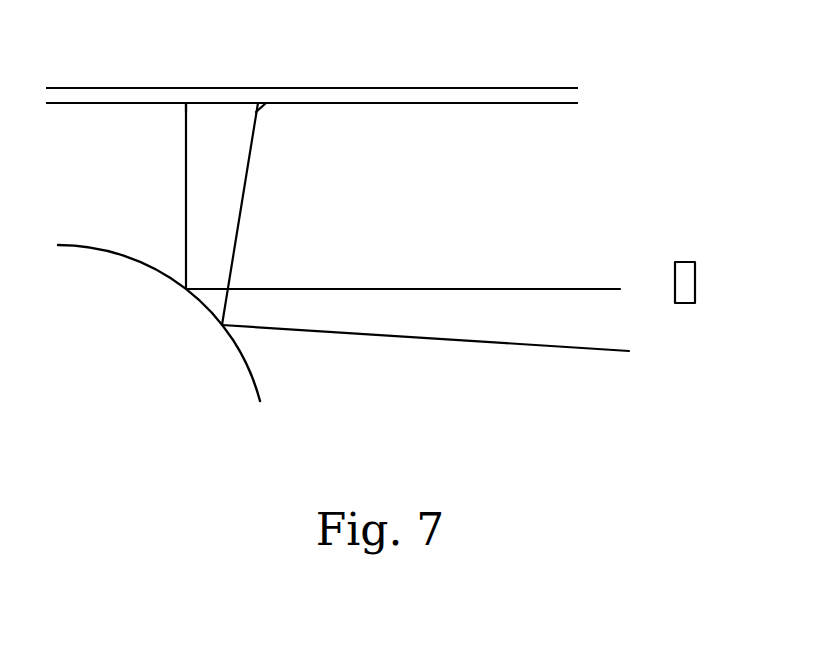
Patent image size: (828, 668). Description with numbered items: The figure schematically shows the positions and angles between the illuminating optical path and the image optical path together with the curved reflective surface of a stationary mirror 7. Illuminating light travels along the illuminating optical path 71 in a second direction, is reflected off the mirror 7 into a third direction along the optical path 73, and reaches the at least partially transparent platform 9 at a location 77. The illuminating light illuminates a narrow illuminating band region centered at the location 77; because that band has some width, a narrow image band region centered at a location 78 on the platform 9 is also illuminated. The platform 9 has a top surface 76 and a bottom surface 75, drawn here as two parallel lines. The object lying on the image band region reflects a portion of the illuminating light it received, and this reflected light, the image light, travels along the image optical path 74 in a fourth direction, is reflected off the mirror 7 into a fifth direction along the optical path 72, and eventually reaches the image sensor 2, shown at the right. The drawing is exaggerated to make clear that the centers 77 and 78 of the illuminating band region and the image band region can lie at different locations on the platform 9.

The stationary mirror 7 is at (101, 249).
The illuminating optical path 71 is at (576, 349).
The optical path 72 is at (484, 289).
The optical path 73 is at (253, 167).
The image optical path 74 is at (185, 173).
The bottom surface 75 is at (453, 103).
The top surface 76 is at (372, 88).
The location 77 is at (263, 105).
The location 78 is at (178, 106).
The at least partially transparent platform 9 is at (502, 96).
The image sensor 2 is at (685, 266).